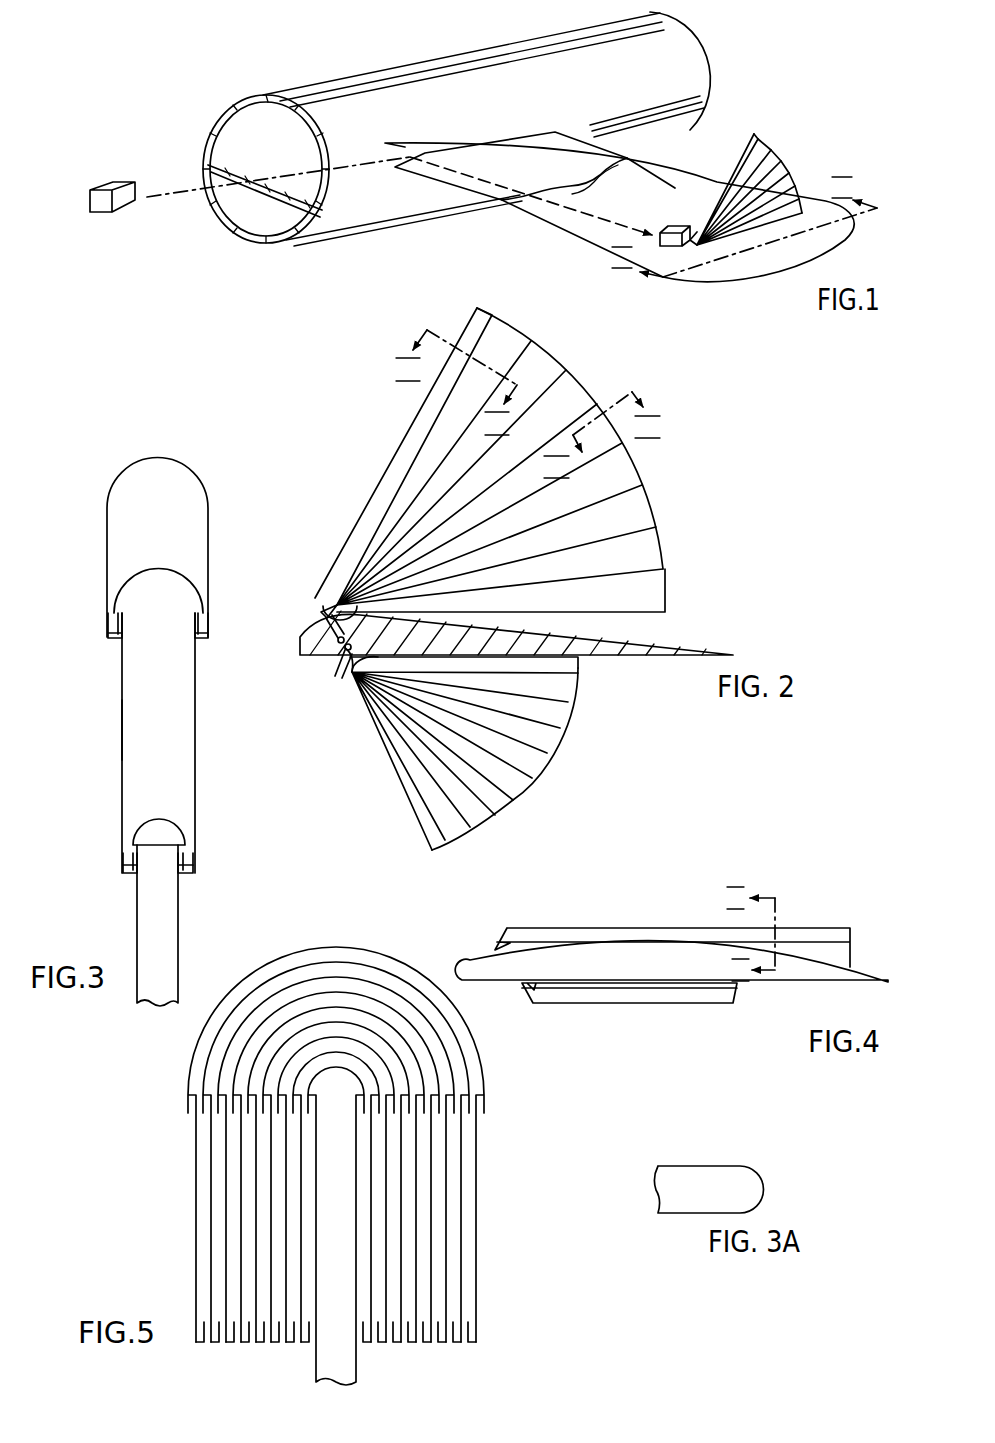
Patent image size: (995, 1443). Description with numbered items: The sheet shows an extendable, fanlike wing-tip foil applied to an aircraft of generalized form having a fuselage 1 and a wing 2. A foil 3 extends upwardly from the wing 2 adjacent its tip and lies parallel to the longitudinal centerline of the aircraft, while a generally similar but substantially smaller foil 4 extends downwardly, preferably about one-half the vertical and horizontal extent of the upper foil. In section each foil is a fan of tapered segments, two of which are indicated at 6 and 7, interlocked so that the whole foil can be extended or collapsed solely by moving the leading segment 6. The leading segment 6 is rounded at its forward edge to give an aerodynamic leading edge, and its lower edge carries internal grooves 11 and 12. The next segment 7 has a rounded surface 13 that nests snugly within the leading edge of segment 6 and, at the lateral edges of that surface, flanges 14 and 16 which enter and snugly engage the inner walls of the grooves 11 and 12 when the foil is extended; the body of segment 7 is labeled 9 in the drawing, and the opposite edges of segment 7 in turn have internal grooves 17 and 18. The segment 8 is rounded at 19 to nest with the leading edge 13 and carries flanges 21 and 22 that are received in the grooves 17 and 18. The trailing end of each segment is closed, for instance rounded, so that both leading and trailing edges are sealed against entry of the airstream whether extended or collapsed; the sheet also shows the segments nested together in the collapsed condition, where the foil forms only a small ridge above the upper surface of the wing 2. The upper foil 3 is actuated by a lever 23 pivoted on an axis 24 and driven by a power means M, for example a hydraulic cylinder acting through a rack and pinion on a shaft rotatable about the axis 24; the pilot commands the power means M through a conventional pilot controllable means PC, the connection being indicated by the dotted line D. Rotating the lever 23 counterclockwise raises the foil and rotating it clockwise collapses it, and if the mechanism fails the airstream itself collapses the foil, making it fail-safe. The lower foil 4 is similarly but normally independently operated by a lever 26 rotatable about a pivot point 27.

In FIG. 1, the fuselage 1 is at (530, 38).
In FIG. 1, the wing 2 is at (710, 195).
In FIG. 2, the wing 2 is at (712, 648).
In FIG. 4, the wing 2 is at (800, 973).
In FIG. 1, the foil 3 is at (760, 133).
In FIG. 2, the foil 3 is at (520, 563).
In FIG. 4, the foil 3 is at (643, 936).
In FIG. 2, the lower foil 4 is at (418, 805).
In FIG. 4, the lower foil 4 is at (610, 995).
In FIG. 2, the leading segment 6 is at (487, 317).
In FIG. 3, the leading segment 6 is at (197, 548).
In FIG. 5, the leading segment 6 is at (477, 1163).
In FIG. 2, the segment 7 is at (505, 332).
In FIG. 3, the segment 7 is at (180, 700).
In FIG. 5, the segment 7 is at (462, 1225).
In FIG. 2, the segment 8 is at (538, 360).
In FIG. 3, the segment 8 is at (172, 938).
In FIG. 5, the segment 8 is at (445, 1263).
In FIG. 3, the blade body 9 is at (196, 733).
In FIG. 3, the internal groove 11 is at (200, 633).
In FIG. 3, the internal groove 12 is at (108, 633).
In FIG. 3, the rounded surface 13 is at (130, 570).
In FIG. 3, the flange 14 is at (205, 620).
In FIG. 3, the flange 16 is at (108, 620).
In FIG. 3, the internal groove 17 is at (193, 865).
In FIG. 3, the internal groove 18 is at (123, 865).
In FIG. 3, the rounded leading edge 19 is at (160, 818).
In FIG. 3, the flange 21 is at (192, 858).
In FIG. 3, the flange 22 is at (125, 858).
In FIG. 2, the lever 23 is at (323, 617).
In FIG. 2, the axis 24 is at (325, 624).
In FIG. 2, the lever 26 is at (340, 678).
In FIG. 2, the pivot point 27 is at (343, 653).
In FIG. 1, the dotted line D is at (493, 180).
In FIG. 1, the power means M is at (662, 230).
In FIG. 1, the pilot controllable means PC is at (140, 150).